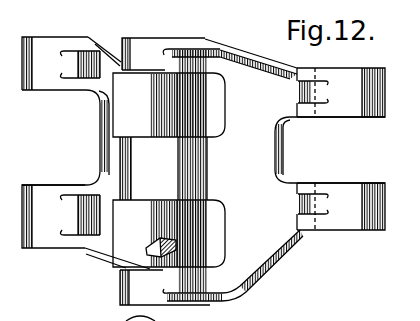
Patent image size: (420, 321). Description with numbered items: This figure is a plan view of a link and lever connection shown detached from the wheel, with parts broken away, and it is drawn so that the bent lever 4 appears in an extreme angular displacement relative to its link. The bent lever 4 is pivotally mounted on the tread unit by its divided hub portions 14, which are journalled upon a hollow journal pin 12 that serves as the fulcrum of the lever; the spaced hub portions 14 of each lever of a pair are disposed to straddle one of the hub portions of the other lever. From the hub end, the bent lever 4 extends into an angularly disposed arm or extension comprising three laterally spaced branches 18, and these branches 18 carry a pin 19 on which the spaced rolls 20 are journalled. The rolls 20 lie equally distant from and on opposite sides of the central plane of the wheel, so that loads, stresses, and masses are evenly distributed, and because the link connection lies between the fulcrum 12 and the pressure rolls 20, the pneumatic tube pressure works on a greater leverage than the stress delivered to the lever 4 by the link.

The bent lever 4 is at (203, 179).
The hollow journal pin 12 is at (83, 74).
The divided hub portions 14 is at (341, 149).
The laterally spaced branches 18 is at (142, 43).
The pin 19 is at (150, 243).
The spaced rolls 20 is at (169, 170).